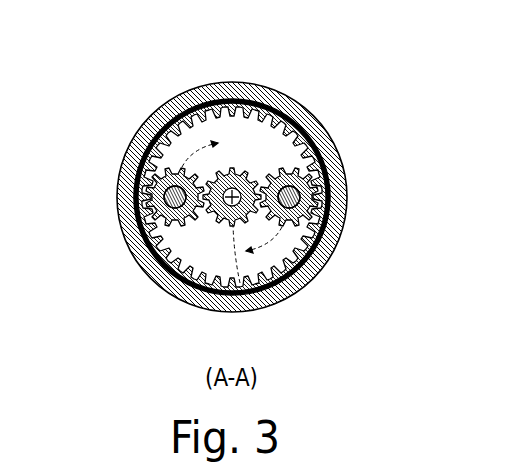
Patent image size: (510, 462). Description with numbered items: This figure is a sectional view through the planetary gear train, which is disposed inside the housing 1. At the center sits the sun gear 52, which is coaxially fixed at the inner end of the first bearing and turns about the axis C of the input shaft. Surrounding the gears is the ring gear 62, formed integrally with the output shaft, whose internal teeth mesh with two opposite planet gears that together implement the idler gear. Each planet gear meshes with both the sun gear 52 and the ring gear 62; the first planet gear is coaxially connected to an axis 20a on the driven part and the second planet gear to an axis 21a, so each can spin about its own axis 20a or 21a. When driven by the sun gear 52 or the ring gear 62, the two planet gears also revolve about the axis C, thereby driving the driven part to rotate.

The housing 1 is at (347, 199).
The sun gear 52 is at (225, 87).
The ring gear 62 is at (237, 167).
The axis 20a is at (140, 257).
The axis 21a is at (297, 272).
The axis C is at (257, 305).